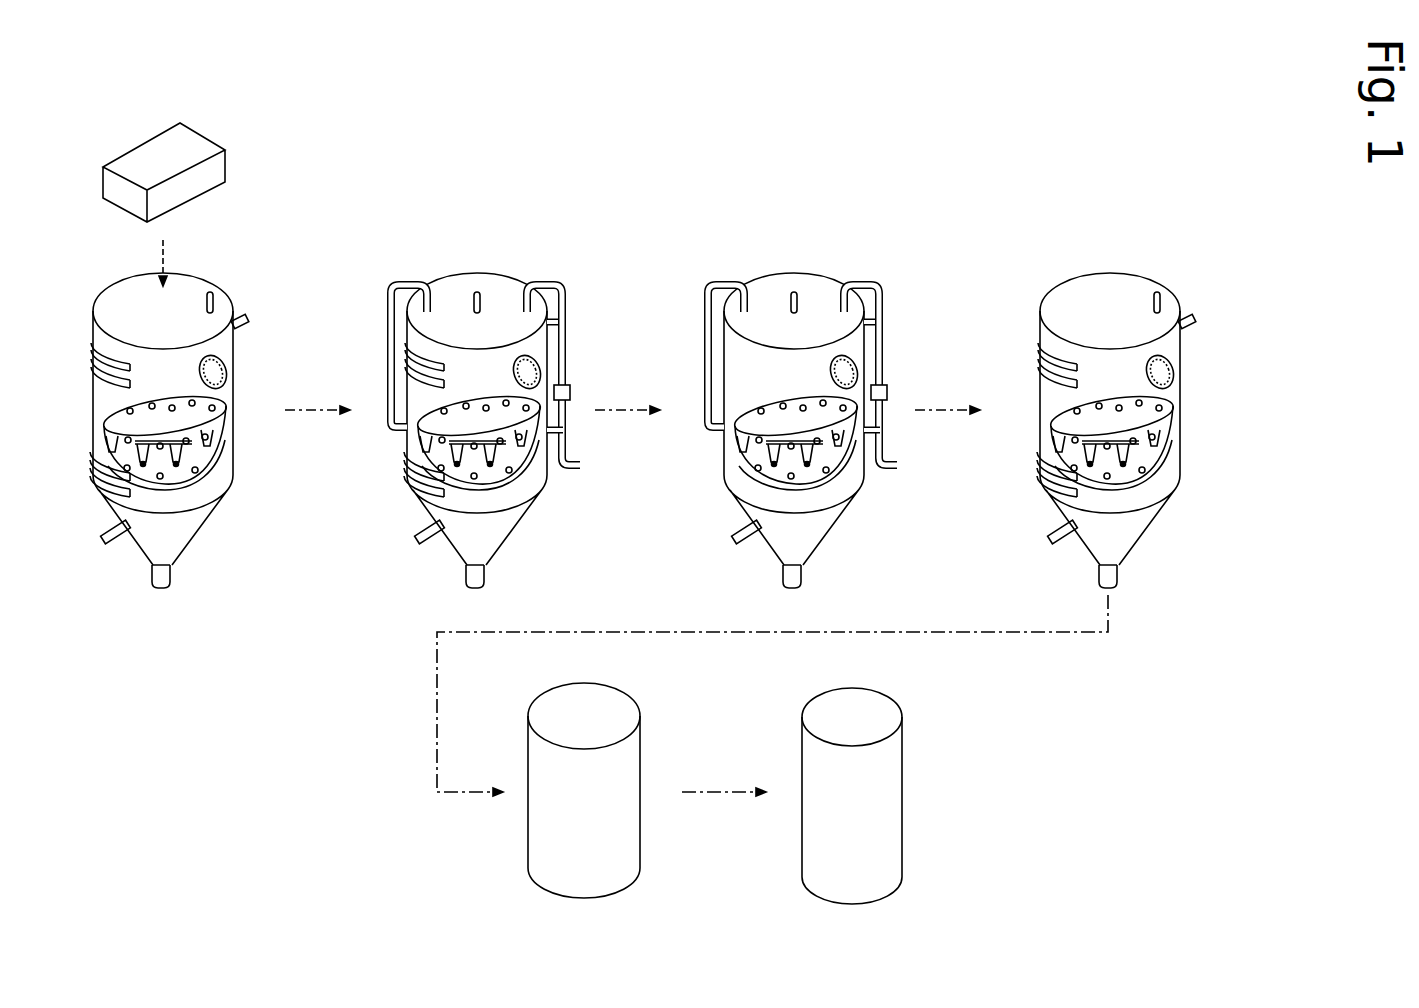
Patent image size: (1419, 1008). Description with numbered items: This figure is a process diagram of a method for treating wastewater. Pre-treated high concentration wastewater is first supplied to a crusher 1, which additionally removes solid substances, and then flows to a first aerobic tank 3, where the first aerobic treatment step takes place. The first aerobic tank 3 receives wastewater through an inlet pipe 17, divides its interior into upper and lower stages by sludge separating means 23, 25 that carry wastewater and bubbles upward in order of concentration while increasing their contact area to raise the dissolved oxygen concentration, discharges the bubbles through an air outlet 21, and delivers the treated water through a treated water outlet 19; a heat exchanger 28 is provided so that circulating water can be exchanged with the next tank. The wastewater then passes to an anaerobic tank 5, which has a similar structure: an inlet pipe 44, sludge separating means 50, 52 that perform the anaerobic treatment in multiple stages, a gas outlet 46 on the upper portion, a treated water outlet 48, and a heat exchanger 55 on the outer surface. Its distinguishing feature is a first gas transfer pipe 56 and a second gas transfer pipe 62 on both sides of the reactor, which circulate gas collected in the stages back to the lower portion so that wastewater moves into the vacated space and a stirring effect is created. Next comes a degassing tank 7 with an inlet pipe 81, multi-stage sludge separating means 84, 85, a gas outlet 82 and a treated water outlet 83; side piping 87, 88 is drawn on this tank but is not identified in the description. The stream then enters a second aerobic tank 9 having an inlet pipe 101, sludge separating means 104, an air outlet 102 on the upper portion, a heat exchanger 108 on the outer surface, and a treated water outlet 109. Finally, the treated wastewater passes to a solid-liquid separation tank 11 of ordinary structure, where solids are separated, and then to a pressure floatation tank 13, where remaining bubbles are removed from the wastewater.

The crusher 1 is at (232, 165).
The first aerobic tank 3 is at (237, 290).
The anaerobic tank 5 is at (507, 413).
The degassing tank 7 is at (826, 413).
The second aerobic tank 9 is at (1131, 413).
The solid-liquid separation tank 11 is at (642, 702).
The pressure floatation tank 13 is at (908, 708).
The inlet pipe 17 is at (110, 538).
The treated water outlet 19 is at (249, 318).
The air outlet 21 is at (212, 290).
The sludge separating means 23 is at (175, 470).
The sludge separating means 25 is at (217, 473).
The heat exchanger 28 is at (93, 358).
The inlet pipe 44 is at (397, 558).
The gas outlet 46 is at (488, 270).
The treated water outlet 48 is at (586, 324).
The sludge separating means 50 is at (462, 552).
The sludge separating means 52 is at (497, 471).
The heat exchanger 55 is at (403, 353).
The first gas transfer pipe 56 is at (385, 418).
The second gas transfer pipe 62 is at (569, 375).
The inlet pipe 81 is at (713, 559).
The gas outlet 82 is at (805, 271).
The treated water outlet 83 is at (903, 324).
The sludge separating means 84 is at (780, 552).
The sludge separating means 85 is at (813, 471).
The circulation pipe inlet 87 is at (702, 422).
The pump 88 is at (887, 375).
The inlet pipe 101 is at (1041, 567).
The air outlet 102 is at (1133, 431).
The sludge separating means 104 is at (1136, 471).
The heat exchanger 108 is at (1045, 365).
The treated water outlet 109 is at (1221, 310).